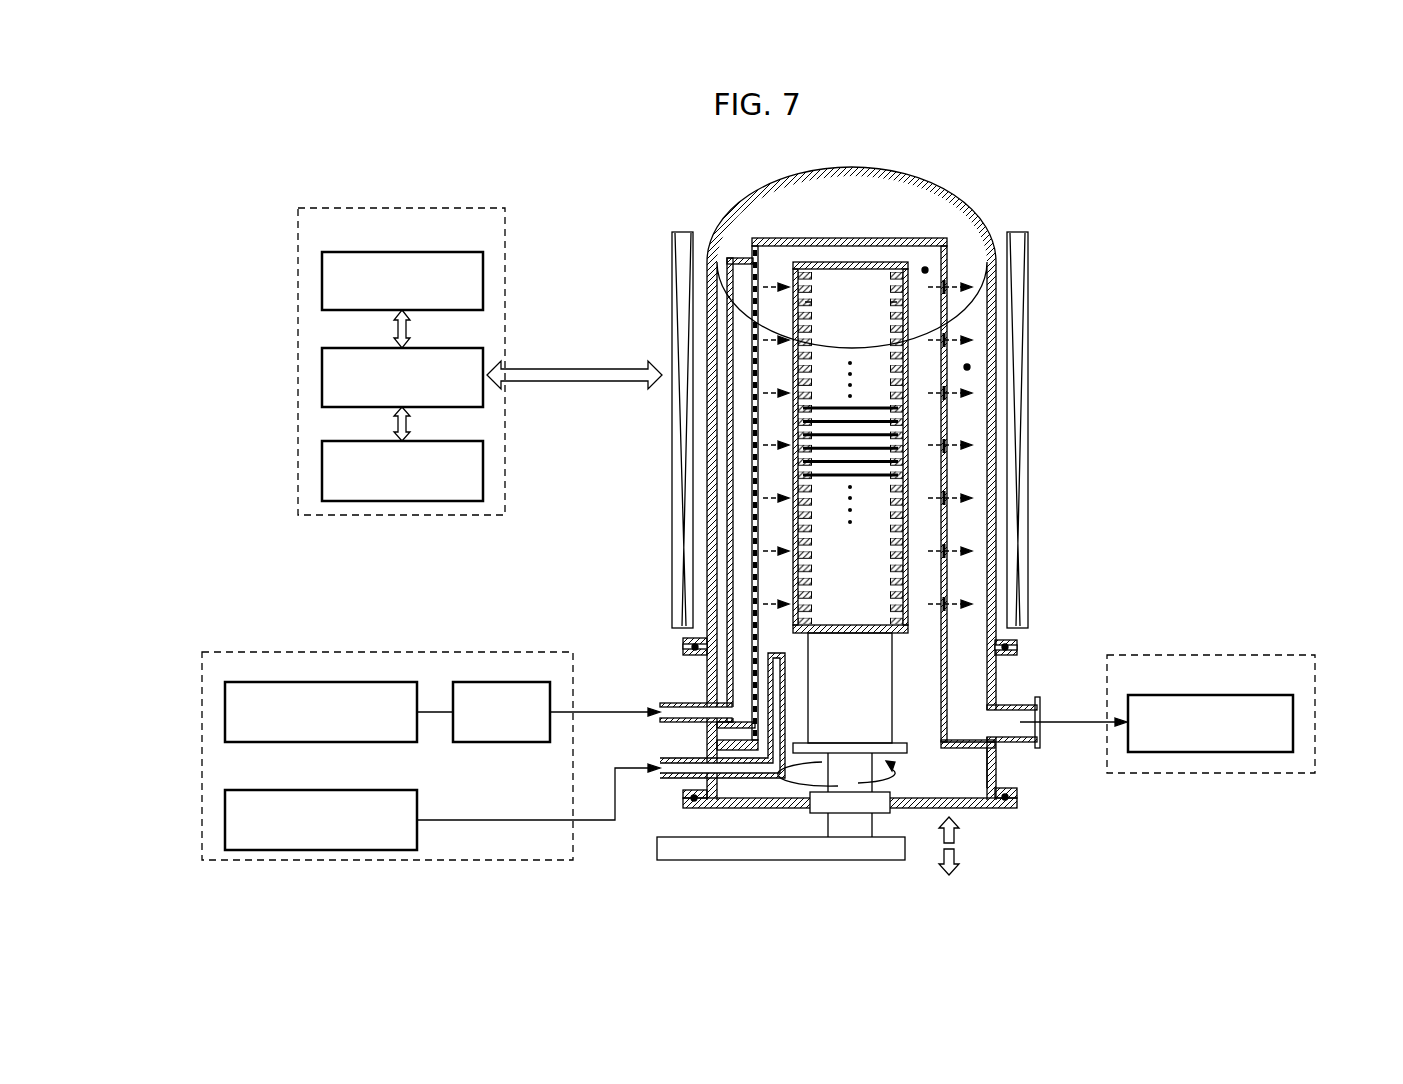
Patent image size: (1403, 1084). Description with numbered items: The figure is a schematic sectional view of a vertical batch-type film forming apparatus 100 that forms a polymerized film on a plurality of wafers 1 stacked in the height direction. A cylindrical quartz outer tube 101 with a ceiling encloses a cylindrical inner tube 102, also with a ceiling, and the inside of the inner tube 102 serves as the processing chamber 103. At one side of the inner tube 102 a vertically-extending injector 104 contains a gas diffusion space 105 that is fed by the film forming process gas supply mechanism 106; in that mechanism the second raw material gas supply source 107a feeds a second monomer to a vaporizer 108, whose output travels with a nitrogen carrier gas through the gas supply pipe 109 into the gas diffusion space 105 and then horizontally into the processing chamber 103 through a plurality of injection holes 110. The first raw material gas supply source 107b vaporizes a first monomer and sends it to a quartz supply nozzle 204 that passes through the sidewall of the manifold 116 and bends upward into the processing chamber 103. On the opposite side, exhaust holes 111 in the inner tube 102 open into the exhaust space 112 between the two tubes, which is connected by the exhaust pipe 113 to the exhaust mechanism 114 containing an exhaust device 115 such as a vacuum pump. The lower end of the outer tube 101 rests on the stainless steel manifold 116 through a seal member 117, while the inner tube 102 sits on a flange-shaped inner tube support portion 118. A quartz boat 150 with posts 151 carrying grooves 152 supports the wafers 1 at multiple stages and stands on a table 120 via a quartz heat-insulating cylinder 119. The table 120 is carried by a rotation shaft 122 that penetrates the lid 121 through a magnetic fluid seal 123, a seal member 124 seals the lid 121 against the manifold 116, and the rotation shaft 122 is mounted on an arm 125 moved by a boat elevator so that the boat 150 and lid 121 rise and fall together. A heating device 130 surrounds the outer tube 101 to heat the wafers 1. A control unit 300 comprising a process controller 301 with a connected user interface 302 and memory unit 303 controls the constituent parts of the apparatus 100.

The film forming apparatus 100 is at (566, 196).
The outer tube 101 is at (930, 184).
The inner tube 102 is at (820, 240).
The processing chamber 103 is at (927, 268).
The injector 104 is at (744, 250).
The gas diffusion space 105 is at (743, 320).
The film forming process gas supply mechanism 106 is at (431, 740).
The second raw material gas supply source 107a is at (358, 682).
The first raw material gas supply source 107b is at (358, 790).
The vaporizer 108 is at (498, 682).
The gas supply pipe 109 is at (680, 703).
The injection holes 110 is at (758, 300).
The exhaust holes 111 is at (947, 337).
The exhaust space 112 is at (969, 367).
The exhaust pipe 113 is at (1012, 705).
The exhaust mechanism 114 is at (1167, 701).
The exhaust device 115 is at (1185, 695).
The manifold 116 is at (990, 762).
The seal member 117 is at (1012, 647).
The inner tube support portion 118 is at (955, 748).
The heat-insulating cylinder 119 is at (833, 696).
The table 120 is at (895, 743).
The lid 121 is at (980, 808).
The rotation shaft 122 is at (885, 775).
The magnetic fluid seal 123 is at (823, 806).
The seal member 124 is at (1017, 798).
The arm 125 is at (715, 850).
The heating device 130 is at (1020, 445).
The boat 150 is at (880, 254).
The posts 151 is at (905, 520).
The grooves 152 is at (895, 302).
The wafers 1 is at (870, 406).
The supply nozzle 204 is at (668, 780).
The control unit 300 is at (480, 344).
The process controller 301 is at (430, 348).
The user interface 302 is at (430, 441).
The memory unit 303 is at (430, 252).